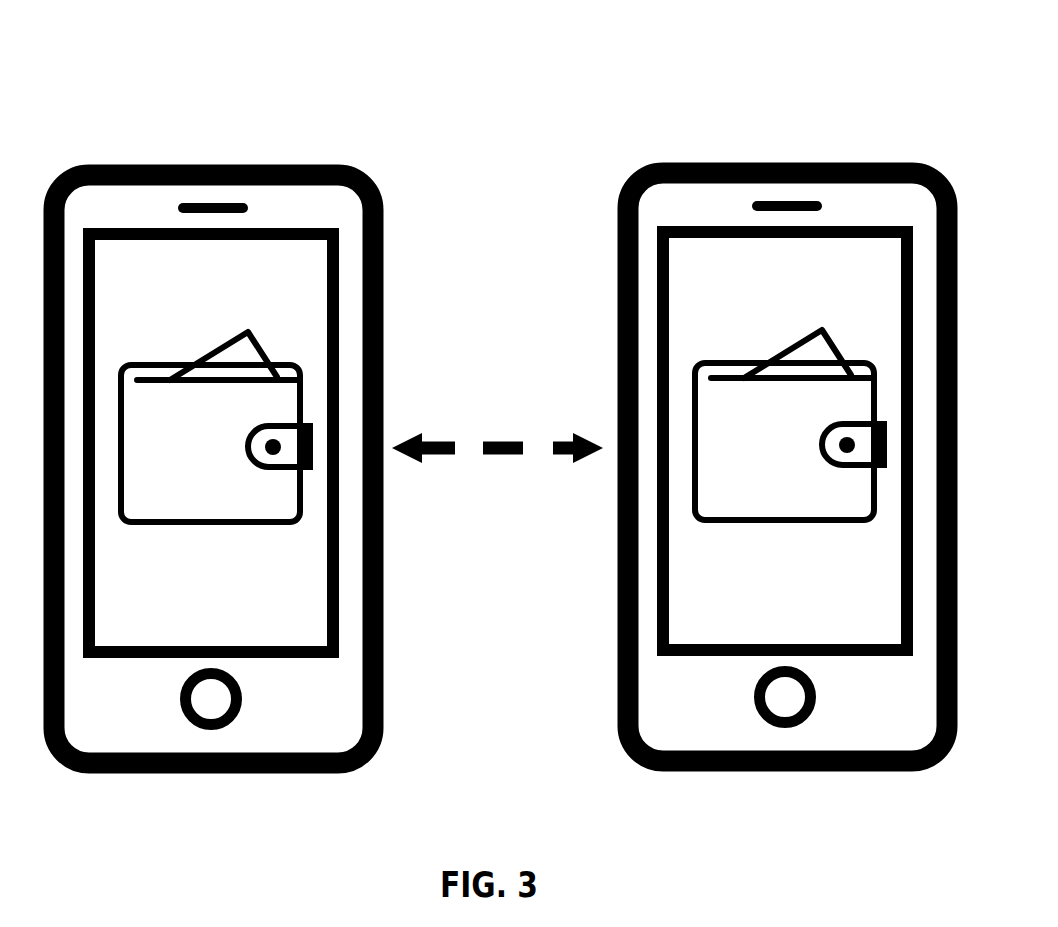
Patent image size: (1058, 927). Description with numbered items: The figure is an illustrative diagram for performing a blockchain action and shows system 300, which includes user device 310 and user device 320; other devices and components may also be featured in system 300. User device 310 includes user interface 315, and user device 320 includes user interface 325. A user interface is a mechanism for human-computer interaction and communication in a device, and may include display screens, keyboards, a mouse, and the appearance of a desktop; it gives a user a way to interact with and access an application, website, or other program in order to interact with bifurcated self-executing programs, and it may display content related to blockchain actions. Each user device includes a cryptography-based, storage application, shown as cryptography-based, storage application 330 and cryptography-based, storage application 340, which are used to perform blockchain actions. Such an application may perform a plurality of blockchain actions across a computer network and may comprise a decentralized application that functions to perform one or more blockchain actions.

The system 300 is at (512, 37).
The user device 310 is at (190, 152).
The user interface 315 is at (190, 302).
The user device 320 is at (787, 441).
The user interface 325 is at (785, 441).
The cryptography-based, storage application 330 is at (189, 456).
The cryptography-based, storage application 340 is at (791, 425).